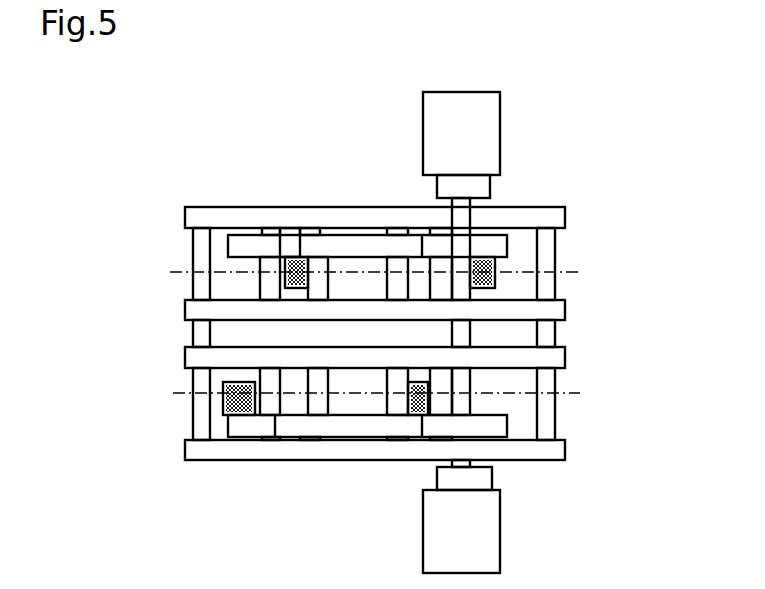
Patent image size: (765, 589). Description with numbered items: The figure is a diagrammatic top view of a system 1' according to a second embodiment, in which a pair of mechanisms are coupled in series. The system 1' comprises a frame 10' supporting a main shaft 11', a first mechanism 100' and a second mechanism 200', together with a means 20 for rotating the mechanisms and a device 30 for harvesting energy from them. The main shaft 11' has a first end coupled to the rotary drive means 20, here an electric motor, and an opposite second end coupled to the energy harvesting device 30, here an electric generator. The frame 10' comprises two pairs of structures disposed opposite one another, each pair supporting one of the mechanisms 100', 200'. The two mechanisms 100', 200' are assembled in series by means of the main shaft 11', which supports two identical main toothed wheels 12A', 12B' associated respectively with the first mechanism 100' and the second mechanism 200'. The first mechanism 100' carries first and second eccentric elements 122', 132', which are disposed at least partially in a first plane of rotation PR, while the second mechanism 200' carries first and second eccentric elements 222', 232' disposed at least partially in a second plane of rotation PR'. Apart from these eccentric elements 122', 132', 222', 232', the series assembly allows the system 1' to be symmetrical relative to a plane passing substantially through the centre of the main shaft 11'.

The system 1' is at (387, 328).
The frame 10' is at (379, 229).
The main shaft 11' is at (441, 338).
The main toothed wheel 12A' is at (457, 220).
The main toothed wheel 12B' is at (457, 439).
The means for rotating the mechanisms 20 is at (461, 145).
The device for harvesting energy 30 is at (461, 516).
The first mechanism 100' is at (387, 332).
The second mechanism 200' is at (384, 437).
The first eccentric element 122' is at (307, 204).
The second eccentric element 132' is at (579, 257).
The first eccentric element 222' is at (380, 456).
The second eccentric element 232' is at (215, 457).
The first plane of rotation PR is at (357, 273).
The second plane of rotation PR' is at (357, 398).